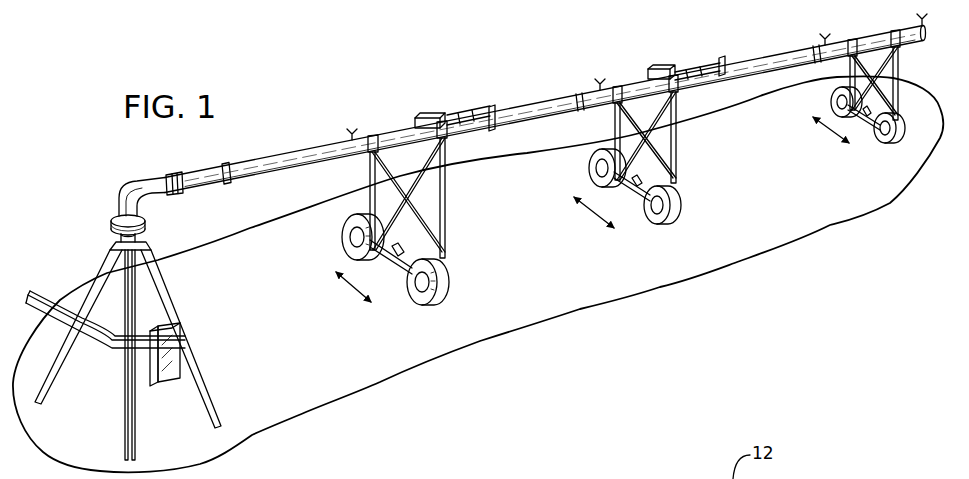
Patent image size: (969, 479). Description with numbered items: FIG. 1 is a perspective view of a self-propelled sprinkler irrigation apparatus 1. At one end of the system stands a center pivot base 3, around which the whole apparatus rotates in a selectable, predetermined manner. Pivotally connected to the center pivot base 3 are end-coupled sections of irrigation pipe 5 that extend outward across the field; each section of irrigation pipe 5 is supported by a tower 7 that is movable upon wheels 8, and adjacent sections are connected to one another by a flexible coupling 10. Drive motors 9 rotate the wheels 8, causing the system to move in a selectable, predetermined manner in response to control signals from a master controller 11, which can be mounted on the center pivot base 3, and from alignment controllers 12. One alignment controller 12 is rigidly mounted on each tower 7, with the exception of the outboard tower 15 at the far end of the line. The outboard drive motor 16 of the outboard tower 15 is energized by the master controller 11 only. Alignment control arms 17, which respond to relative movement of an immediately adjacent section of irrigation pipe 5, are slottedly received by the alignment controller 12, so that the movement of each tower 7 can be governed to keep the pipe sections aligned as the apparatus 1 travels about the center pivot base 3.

The self-propelled sprinkler irrigation apparatus 1 is at (357, 57).
The center pivot base 3 is at (100, 265).
The irrigation pipe 5 is at (273, 161).
The tower 7 is at (445, 215).
The wheels 8 is at (345, 232).
The drive motors 9 is at (678, 152).
The flexible coupling 10 is at (468, 128).
The master controller 11 is at (173, 332).
The alignment controller 12 is at (420, 114).
The outboard tower 15 is at (897, 67).
The outboard drive motor 16 is at (897, 110).
The alignment control arms 17 is at (468, 110).